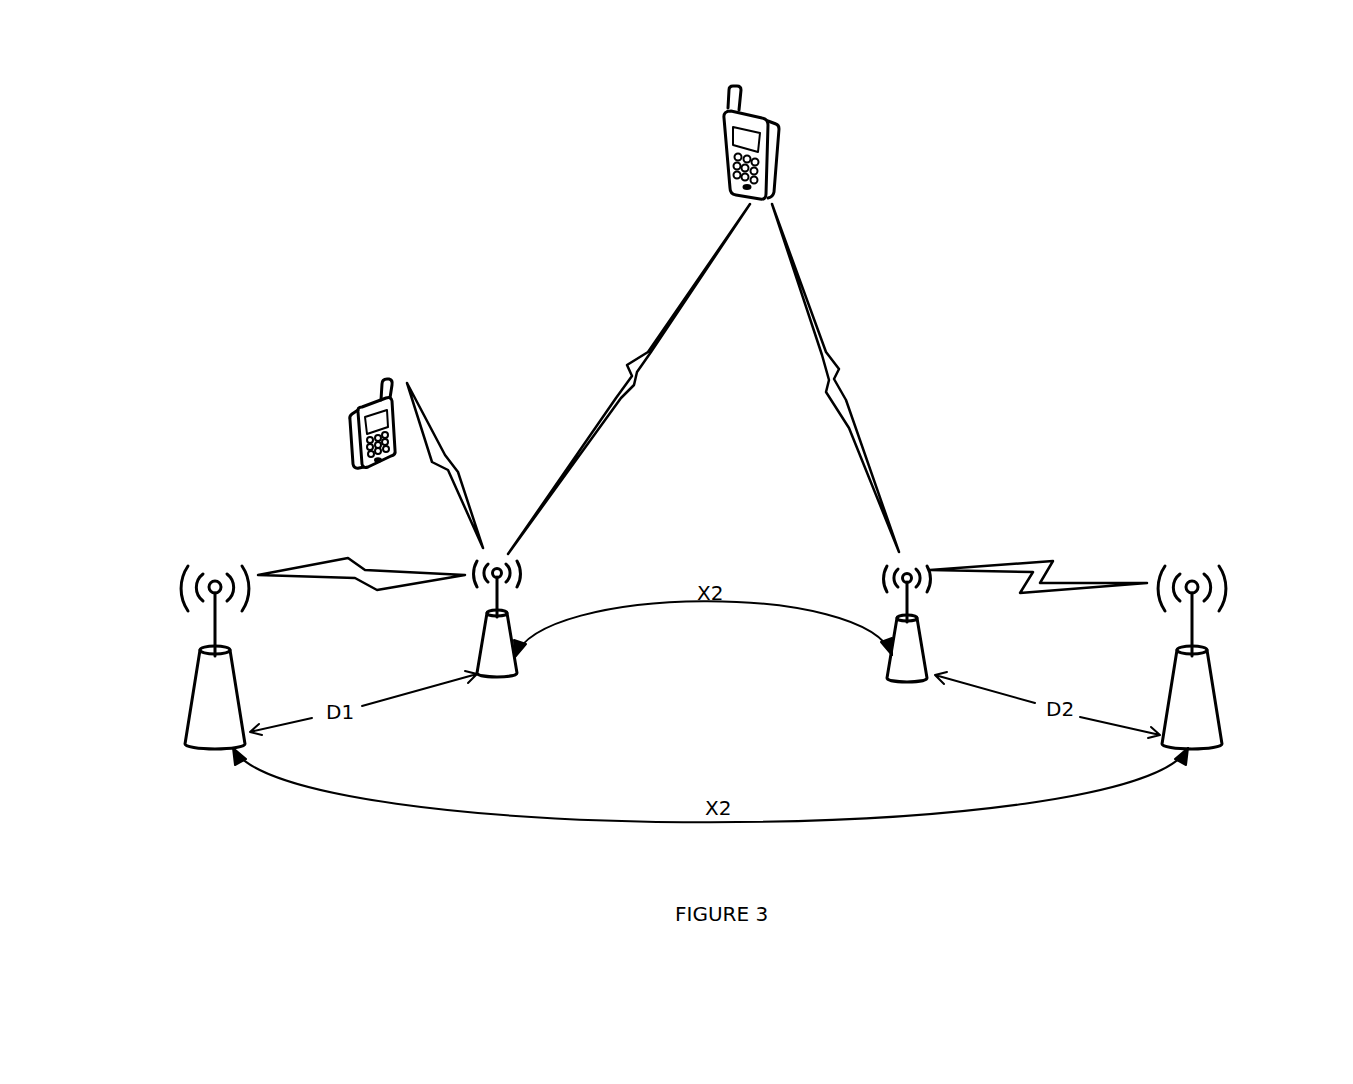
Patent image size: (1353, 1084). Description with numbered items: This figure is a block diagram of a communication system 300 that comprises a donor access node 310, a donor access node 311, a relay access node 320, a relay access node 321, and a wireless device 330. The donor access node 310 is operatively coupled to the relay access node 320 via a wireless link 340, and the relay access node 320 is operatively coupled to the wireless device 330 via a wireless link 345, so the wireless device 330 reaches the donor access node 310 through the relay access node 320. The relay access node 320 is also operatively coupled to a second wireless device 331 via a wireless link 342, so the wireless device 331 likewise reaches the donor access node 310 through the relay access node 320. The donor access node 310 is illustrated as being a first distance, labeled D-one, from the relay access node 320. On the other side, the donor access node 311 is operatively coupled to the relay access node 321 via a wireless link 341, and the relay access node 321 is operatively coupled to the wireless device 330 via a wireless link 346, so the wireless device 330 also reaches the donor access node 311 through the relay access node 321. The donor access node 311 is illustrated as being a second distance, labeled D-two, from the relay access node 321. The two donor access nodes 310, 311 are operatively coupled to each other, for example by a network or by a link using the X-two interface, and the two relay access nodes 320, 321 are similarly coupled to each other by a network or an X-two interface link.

The communication system 300 is at (1020, 105).
The donor access node 310 is at (188, 712).
The donor access node 311 is at (1222, 717).
The relay access node 320 is at (500, 681).
The relay access node 321 is at (910, 681).
The wireless device 330 is at (772, 198).
The wireless device 331 is at (358, 472).
The wireless link 340 is at (348, 558).
The wireless link 341 is at (1053, 561).
The wireless link 342 is at (450, 458).
The wireless link 345 is at (622, 369).
The wireless link 346 is at (842, 378).